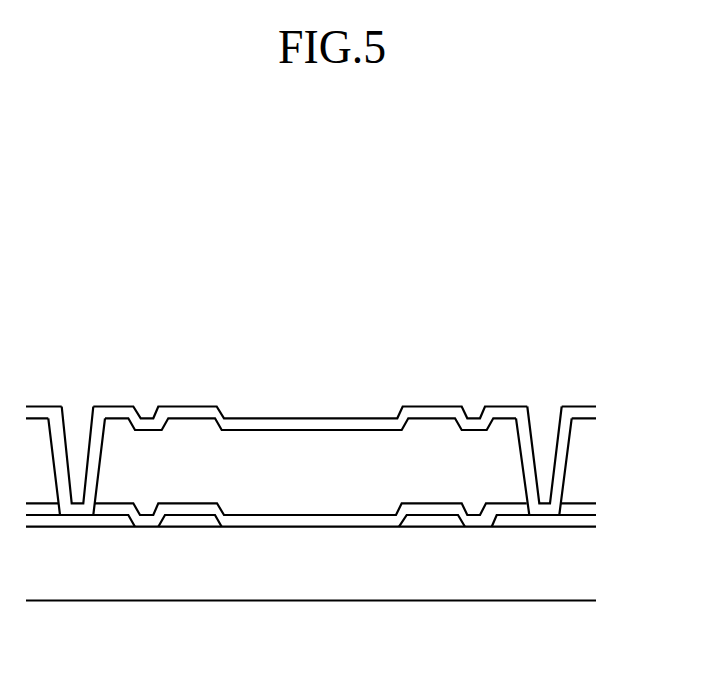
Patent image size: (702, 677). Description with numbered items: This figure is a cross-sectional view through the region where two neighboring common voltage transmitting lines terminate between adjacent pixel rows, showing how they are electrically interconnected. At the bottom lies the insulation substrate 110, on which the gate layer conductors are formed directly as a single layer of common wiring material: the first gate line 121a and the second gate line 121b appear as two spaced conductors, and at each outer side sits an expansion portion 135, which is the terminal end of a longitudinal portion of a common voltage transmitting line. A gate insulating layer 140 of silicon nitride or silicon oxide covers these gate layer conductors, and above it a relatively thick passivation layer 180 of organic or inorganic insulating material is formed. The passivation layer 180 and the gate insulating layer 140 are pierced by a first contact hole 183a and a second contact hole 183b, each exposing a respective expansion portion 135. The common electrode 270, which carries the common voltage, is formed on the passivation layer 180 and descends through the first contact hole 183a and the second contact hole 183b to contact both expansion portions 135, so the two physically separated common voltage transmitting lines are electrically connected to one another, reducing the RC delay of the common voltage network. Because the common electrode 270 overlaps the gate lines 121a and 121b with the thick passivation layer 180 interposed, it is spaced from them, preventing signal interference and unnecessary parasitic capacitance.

The insulation substrate 110 is at (568, 577).
The first gate line 121a is at (425, 520).
The second gate line 121b is at (192, 518).
The expansion portion 135 is at (95, 518).
The gate insulating layer 140 is at (273, 518).
The passivation layer 180 is at (339, 485).
The first contact hole 183a is at (53, 448).
The second contact hole 183b is at (520, 445).
The common electrode 270 is at (303, 427).